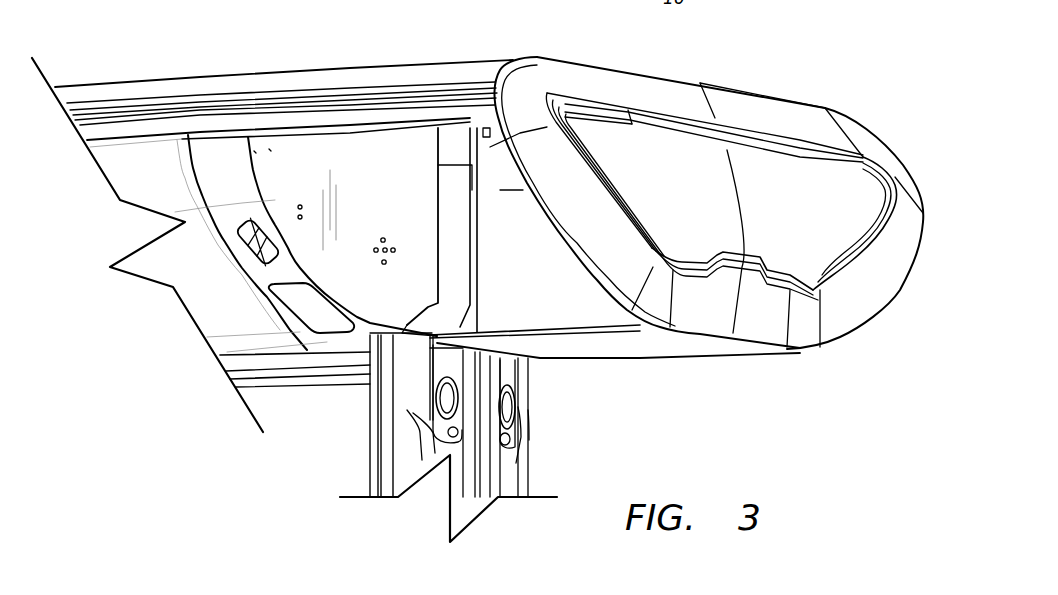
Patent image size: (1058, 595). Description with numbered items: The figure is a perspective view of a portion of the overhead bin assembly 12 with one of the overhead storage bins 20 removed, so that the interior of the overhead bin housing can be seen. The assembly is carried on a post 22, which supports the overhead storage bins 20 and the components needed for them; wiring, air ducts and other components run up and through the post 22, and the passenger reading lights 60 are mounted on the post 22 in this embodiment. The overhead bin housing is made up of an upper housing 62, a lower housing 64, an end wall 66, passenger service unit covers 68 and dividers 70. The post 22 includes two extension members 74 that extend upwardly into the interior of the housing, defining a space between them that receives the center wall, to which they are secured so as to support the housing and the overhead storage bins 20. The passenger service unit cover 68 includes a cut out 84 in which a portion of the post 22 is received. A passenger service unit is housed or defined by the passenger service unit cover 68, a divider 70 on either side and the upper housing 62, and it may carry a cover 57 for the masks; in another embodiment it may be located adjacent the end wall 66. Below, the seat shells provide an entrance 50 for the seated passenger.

The overhead bin assembly 12 is at (808, 67).
The overhead storage bin 20 is at (163, 265).
The post 22 is at (515, 467).
The entrance 50 is at (222, 264).
The cover 57 is at (328, 313).
The passenger reading light 60 is at (440, 403).
The upper housing 62 is at (410, 72).
The lower housing 64 is at (668, 343).
The end wall 66 is at (812, 226).
The passenger service unit cover 68 is at (223, 157).
The divider 70 is at (382, 184).
The extension member 74 is at (450, 193).
The cut out 84 is at (402, 333).